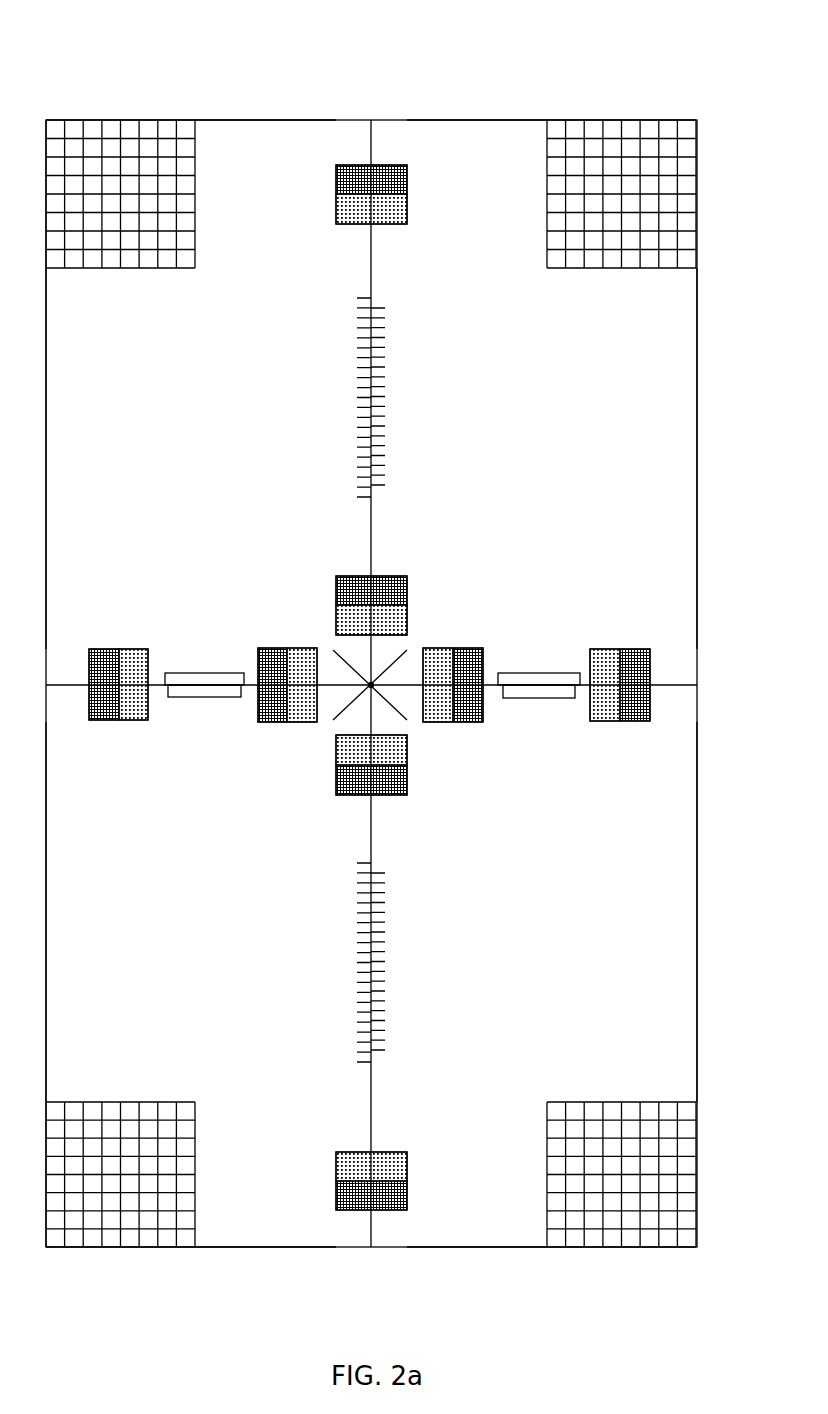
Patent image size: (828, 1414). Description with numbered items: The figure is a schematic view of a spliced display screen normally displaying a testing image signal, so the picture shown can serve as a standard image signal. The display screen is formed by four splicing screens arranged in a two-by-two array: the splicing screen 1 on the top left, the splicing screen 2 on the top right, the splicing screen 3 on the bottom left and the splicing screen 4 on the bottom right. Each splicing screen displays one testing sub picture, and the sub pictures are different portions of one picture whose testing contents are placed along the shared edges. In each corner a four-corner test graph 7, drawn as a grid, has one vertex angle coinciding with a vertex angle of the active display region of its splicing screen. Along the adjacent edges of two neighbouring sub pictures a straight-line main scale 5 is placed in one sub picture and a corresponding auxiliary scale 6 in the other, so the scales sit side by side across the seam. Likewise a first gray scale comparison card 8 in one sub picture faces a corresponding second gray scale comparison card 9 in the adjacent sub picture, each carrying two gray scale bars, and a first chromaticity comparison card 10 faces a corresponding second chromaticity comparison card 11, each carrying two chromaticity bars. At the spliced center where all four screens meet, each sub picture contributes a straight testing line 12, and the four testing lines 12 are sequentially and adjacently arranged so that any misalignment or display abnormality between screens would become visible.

The splicing screen 1 is at (247, 170).
The splicing screen 2 is at (475, 178).
The splicing screen 3 is at (293, 1190).
The splicing screen 4 is at (498, 1190).
The main scale 5 is at (342, 400).
The auxiliary scale 6 is at (405, 398).
The four-corner test graph 7 is at (107, 167).
The first gray scale comparison card 8 is at (390, 124).
The second gray scale comparison card 9 is at (387, 172).
The first chromaticity comparison card 10 is at (371, 569).
The second chromaticity comparison card 11 is at (390, 590).
The testing line 12 is at (390, 663).